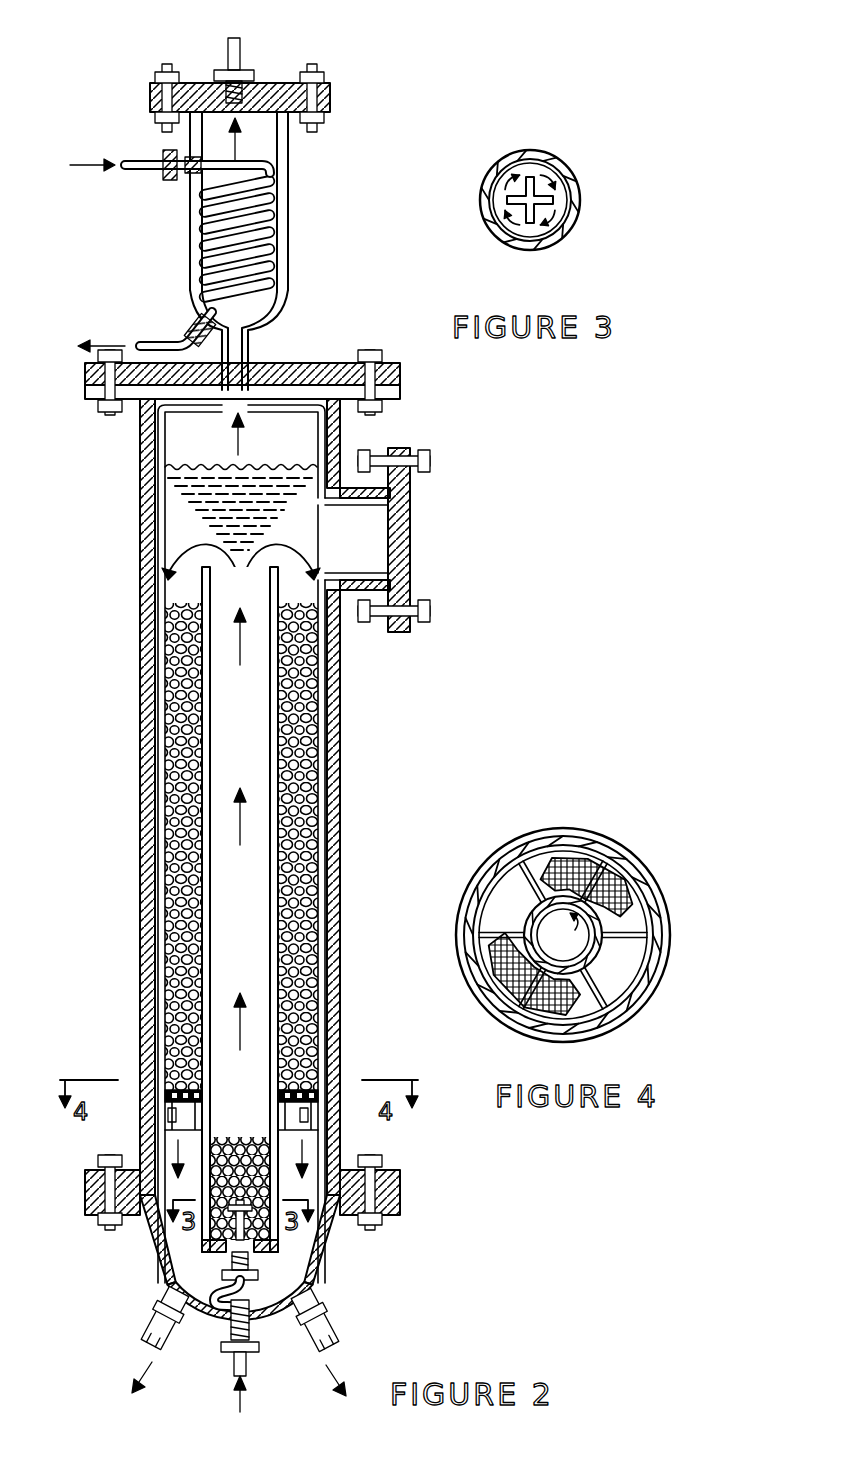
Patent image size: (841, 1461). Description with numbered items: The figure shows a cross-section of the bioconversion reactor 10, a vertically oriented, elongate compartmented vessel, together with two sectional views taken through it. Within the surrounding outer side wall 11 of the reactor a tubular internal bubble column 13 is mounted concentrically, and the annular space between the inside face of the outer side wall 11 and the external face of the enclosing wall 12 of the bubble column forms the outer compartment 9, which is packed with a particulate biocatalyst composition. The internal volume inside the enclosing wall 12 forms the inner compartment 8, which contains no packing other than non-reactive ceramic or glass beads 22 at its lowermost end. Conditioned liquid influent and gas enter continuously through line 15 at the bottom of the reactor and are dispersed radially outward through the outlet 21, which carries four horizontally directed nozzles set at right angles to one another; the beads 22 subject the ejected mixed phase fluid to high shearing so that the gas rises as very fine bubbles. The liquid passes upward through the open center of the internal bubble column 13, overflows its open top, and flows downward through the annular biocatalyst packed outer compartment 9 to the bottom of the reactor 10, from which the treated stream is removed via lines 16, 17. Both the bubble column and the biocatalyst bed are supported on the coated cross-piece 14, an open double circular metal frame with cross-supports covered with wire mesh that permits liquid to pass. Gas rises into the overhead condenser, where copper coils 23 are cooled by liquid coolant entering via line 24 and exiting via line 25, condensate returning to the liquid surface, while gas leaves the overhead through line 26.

In FIG. 2, the inner compartment 8 is at (243, 698).
In FIG. 2, the outer compartment 9 is at (330, 1043).
In FIG. 2, the bioconversion reactor 10 is at (353, 858).
In FIG. 4, the bioconversion reactor 10 is at (661, 1008).
In FIG. 2, the outer side wall 11 is at (333, 762).
In FIG. 4, the outer side wall 11 is at (670, 930).
In FIG. 2, the enclosing wall 12 is at (335, 792).
In FIG. 2, the internal bubble column 13 is at (285, 593).
In FIG. 3, the internal bubble column 13 is at (577, 236).
In FIG. 4, the internal bubble column 13 is at (648, 882).
In FIG. 2, the cross-piece 14 is at (293, 1105).
In FIG. 4, the cross-piece 14 is at (545, 868).
In FIG. 2, the influent line 15 is at (252, 1370).
In FIG. 2, the treated stream removal line 16 is at (170, 1335).
In FIG. 2, the treated stream removal line 17 is at (336, 1332).
In FIG. 2, the outlet 21 is at (258, 1200).
In FIG. 3, the outlet 21 is at (542, 186).
In FIG. 2, the beads 22 is at (243, 1138).
In FIG. 2, the cooling coil 23 is at (288, 200).
In FIG. 2, the coolant inlet line 24 is at (145, 160).
In FIG. 2, the coolant outlet line 25 is at (155, 340).
In FIG. 2, the gas outlet line 26 is at (243, 50).